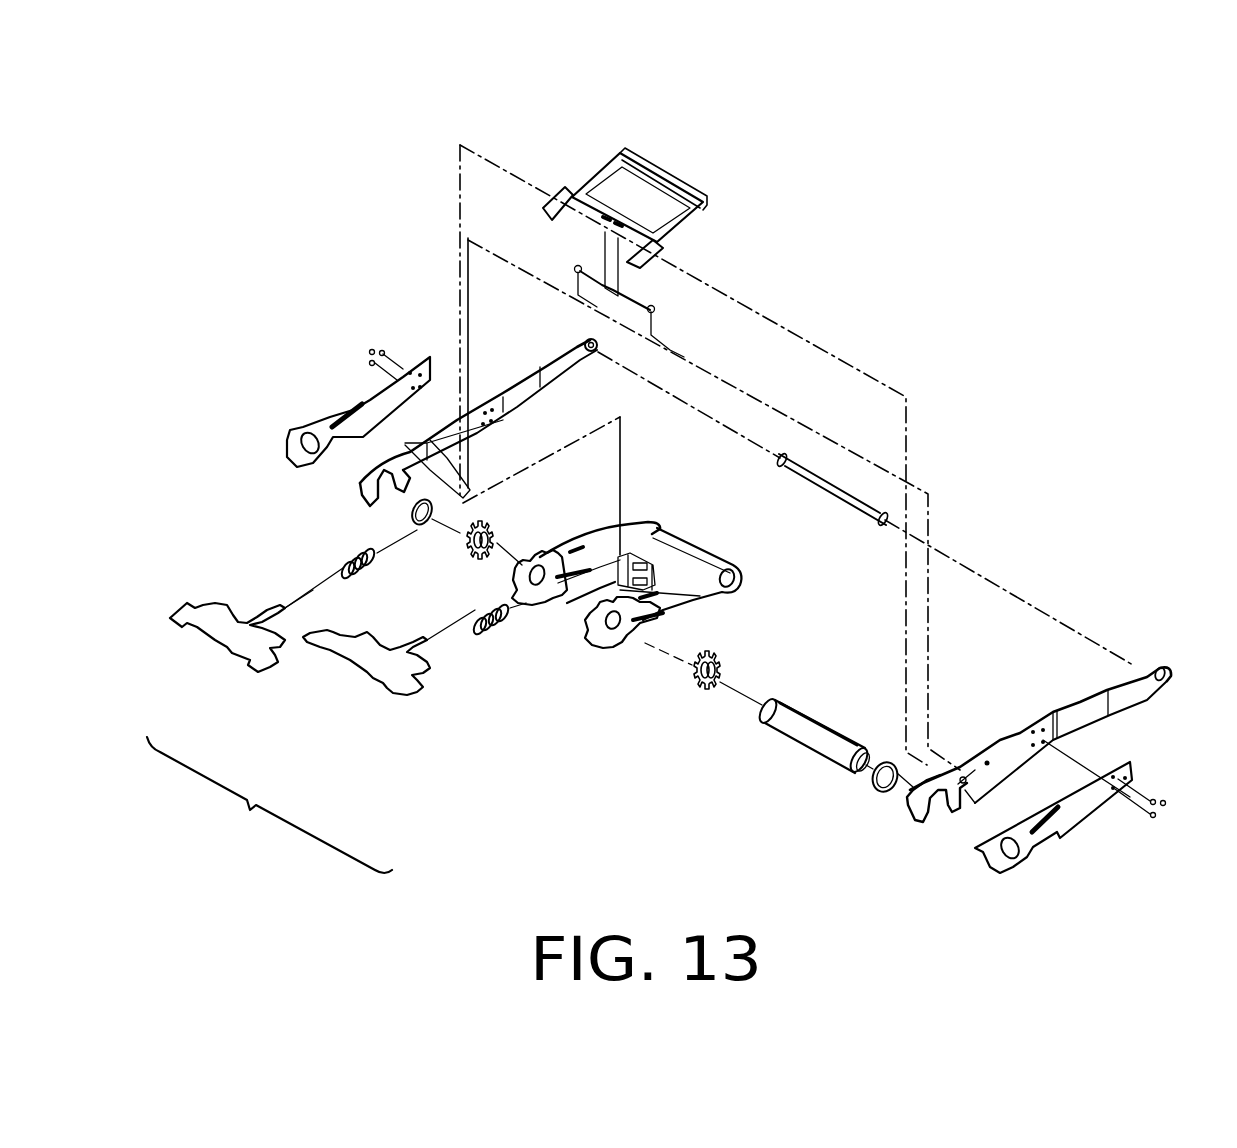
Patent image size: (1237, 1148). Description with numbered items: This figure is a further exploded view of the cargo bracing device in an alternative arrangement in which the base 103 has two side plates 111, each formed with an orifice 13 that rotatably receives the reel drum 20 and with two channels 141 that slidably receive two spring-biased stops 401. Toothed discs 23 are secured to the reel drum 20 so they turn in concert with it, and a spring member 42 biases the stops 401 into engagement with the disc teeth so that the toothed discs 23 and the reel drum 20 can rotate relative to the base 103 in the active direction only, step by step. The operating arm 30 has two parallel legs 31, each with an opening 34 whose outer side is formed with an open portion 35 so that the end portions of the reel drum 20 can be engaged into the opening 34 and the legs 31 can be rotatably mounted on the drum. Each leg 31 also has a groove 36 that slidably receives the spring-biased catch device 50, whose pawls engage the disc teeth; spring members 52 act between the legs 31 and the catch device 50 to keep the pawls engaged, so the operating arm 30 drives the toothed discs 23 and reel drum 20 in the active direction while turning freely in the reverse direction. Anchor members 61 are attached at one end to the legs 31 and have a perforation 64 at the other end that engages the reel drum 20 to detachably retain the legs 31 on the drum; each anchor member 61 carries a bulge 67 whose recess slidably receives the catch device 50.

The spring-biased catch device 50 is at (582, 202).
The spring members 52 is at (643, 307).
The opening 34 is at (355, 492).
The spring member 42 is at (337, 553).
The orifice 13 is at (540, 567).
The side plates 111 is at (603, 547).
The base 103 is at (740, 600).
The channels 141 is at (650, 630).
The toothed discs 23 is at (700, 690).
The reel drum 20 is at (812, 740).
The spring-biased stops 401 is at (352, 645).
The legs 31 is at (1140, 668).
The groove 36 is at (987, 757).
The operating arm 30 is at (1147, 690).
The open portion 35 is at (928, 818).
The anchor members 61 is at (1103, 800).
The bulge 67 is at (1047, 830).
The perforation 64 is at (1010, 857).